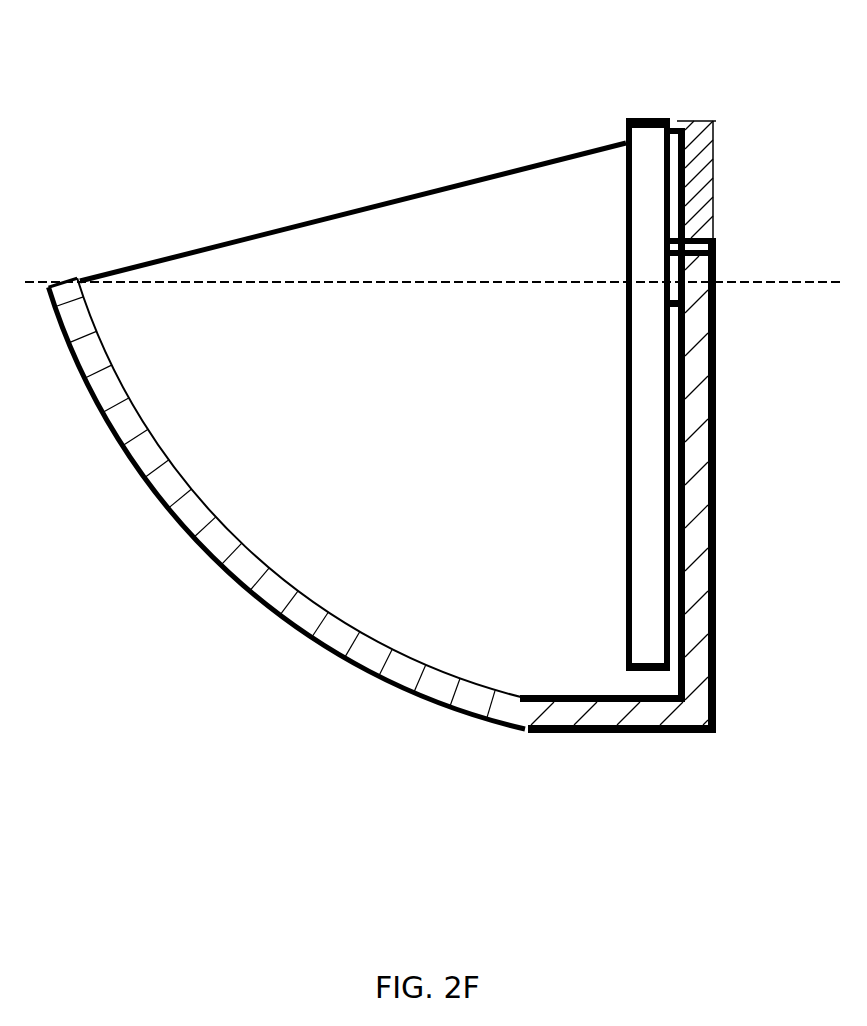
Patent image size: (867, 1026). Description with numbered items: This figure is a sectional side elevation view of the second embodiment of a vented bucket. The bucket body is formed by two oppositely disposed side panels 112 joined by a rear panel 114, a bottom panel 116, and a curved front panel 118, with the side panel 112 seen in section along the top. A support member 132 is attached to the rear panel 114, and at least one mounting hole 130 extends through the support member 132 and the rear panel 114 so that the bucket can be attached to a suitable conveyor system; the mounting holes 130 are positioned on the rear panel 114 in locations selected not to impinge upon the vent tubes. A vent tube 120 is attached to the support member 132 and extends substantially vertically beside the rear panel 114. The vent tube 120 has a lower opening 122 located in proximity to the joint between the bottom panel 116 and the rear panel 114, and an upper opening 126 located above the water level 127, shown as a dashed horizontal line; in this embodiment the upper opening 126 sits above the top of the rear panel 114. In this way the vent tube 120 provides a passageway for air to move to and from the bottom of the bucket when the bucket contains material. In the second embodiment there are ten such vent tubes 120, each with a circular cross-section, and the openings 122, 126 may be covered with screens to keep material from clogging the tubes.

The side panel 112 is at (274, 230).
The rear panel 114 is at (715, 467).
The bottom panel 116 is at (657, 733).
The front panel 118 is at (288, 617).
The vent tube 120 is at (626, 253).
The lower opening 122 is at (643, 670).
The upper opening 126 is at (645, 118).
The water level 127 is at (209, 282).
The mounting hole 130 is at (697, 253).
The support member 132 is at (670, 128).